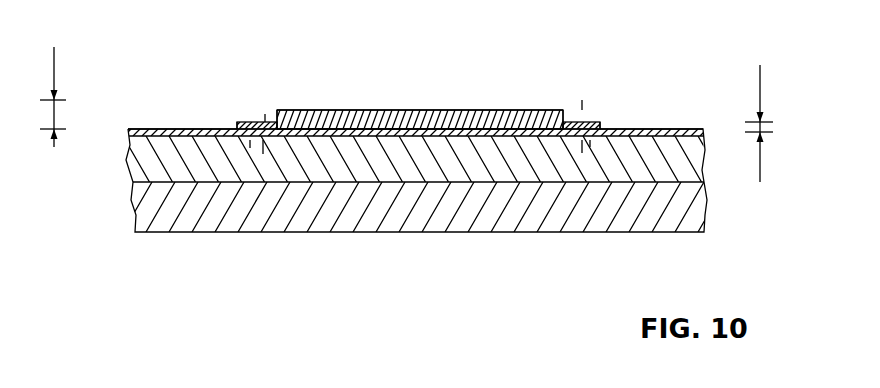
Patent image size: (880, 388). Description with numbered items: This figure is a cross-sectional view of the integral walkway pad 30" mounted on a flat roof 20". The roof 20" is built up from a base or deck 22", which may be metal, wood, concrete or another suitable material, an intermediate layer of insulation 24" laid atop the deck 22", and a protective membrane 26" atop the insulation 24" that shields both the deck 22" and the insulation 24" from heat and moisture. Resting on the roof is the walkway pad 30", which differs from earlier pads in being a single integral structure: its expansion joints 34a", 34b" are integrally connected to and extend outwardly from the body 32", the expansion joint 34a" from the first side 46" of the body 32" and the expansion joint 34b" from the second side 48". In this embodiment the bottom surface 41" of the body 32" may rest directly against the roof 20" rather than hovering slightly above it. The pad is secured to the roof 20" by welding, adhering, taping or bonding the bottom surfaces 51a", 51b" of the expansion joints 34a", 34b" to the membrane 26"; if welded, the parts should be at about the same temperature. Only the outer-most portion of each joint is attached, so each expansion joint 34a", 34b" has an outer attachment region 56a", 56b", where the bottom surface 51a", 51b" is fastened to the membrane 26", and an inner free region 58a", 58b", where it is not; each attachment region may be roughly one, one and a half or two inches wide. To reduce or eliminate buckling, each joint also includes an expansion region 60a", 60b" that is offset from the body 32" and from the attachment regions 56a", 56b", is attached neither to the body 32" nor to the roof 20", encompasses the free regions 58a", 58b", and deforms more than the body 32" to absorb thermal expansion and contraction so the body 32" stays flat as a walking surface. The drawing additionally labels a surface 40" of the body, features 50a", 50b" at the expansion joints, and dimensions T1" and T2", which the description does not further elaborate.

The roof 20 is at (712, 208).
The deck 22 is at (147, 212).
The insulation 24 is at (140, 172).
The protective membrane 26 is at (133, 128).
The walkway pad 30 is at (684, 53).
The body 32 is at (413, 112).
The expansion joint 34a is at (240, 122).
The expansion joint 34b is at (600, 126).
The top surface of layer 32 40 is at (382, 110).
The bottom surface of body 41 is at (468, 128).
The first side of body 46 is at (277, 110).
The second side of body 48 is at (563, 110).
The contact pad 50a is at (240, 122).
The contact pad 50b is at (668, 105).
The bottom surface of expansion joint 51a is at (240, 130).
The bottom surface of expansion joint 51b is at (600, 129).
The outer attachment region 56a is at (250, 152).
The outer attachment region 56b is at (588, 154).
The inner free region 58a is at (276, 150).
The inner free region 58b is at (564, 154).
The expansion region 60a is at (268, 107).
The expansion region 60b is at (576, 95).
The thickness T1 is at (55, 117).
The thickness T2 is at (752, 125).